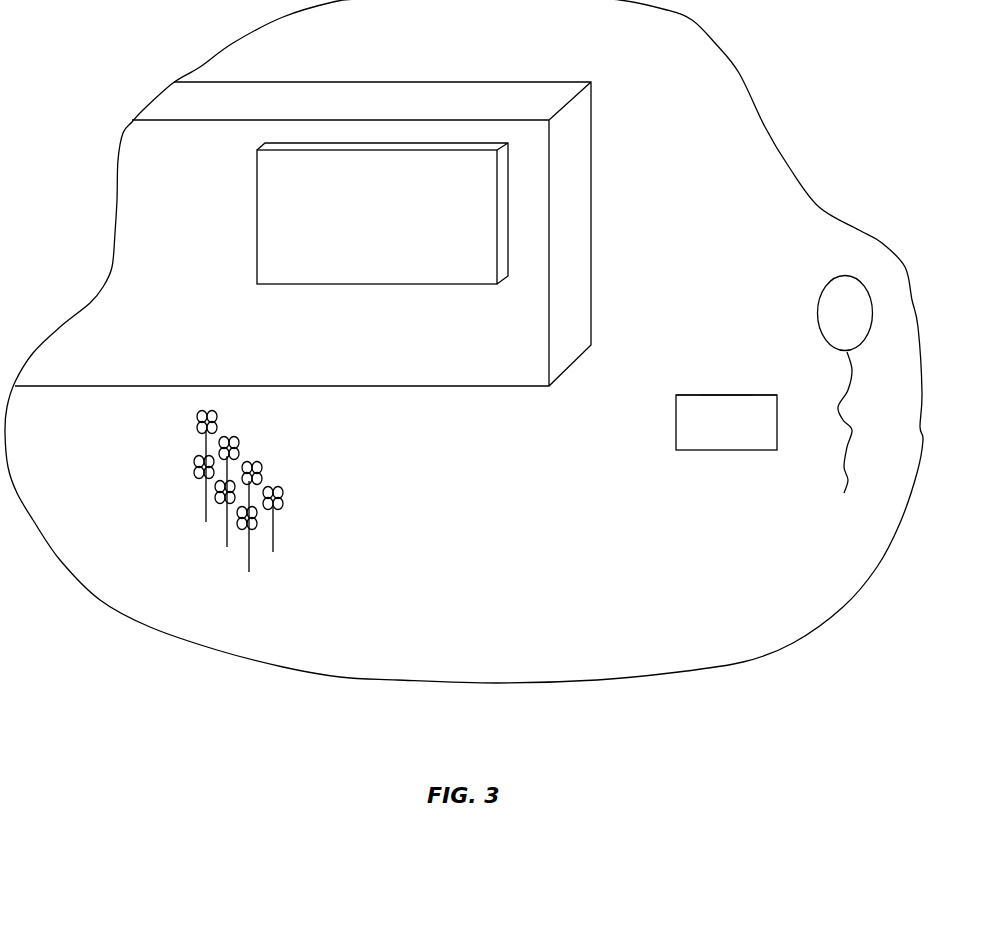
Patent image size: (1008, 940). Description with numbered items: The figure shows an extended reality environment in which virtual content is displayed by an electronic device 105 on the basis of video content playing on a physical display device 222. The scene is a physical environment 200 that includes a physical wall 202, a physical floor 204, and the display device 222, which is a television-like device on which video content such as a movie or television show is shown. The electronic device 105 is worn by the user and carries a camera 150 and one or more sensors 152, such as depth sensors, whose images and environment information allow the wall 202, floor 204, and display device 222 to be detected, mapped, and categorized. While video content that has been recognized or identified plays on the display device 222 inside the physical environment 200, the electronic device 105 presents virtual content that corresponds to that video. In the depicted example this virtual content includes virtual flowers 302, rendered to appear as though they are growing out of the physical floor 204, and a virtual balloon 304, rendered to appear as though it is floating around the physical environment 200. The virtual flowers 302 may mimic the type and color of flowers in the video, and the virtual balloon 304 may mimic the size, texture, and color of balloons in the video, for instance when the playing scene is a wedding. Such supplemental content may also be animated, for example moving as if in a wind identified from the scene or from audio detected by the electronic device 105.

The physical environment 200 is at (656, 65).
The physical wall 202 is at (204, 195).
The physical floor 204 is at (469, 540).
The physical display device 222 is at (508, 210).
The virtual flowers 302 is at (277, 438).
The virtual balloon 304 is at (843, 268).
The electronic device 105 is at (723, 452).
The camera 150 is at (727, 394).
The sensors 152 is at (678, 394).